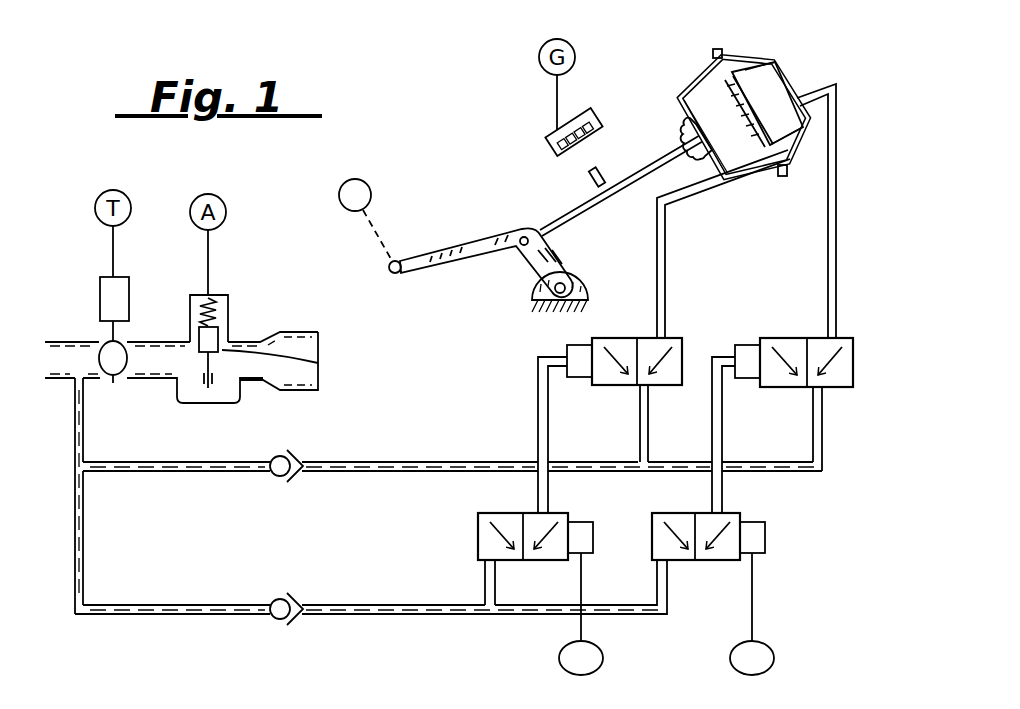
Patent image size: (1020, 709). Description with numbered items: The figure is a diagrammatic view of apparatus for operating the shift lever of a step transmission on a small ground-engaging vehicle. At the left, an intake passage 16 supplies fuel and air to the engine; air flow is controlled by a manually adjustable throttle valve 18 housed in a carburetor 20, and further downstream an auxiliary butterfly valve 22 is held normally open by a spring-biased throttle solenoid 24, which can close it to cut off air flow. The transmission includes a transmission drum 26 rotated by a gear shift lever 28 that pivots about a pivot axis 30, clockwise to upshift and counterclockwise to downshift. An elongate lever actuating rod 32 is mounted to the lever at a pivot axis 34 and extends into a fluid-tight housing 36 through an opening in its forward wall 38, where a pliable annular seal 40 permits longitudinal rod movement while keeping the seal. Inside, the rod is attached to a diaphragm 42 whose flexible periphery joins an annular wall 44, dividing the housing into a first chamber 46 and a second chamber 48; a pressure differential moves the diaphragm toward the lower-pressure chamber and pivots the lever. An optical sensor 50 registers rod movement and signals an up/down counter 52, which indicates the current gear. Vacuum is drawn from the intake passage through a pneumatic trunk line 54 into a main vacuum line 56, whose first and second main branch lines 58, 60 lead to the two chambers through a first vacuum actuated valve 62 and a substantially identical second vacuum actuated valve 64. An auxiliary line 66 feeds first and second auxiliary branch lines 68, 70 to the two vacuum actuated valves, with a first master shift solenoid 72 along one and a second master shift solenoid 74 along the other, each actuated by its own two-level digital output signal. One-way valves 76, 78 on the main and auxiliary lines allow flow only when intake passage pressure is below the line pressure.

The intake passage 16 is at (162, 340).
The throttle valve 18 is at (318, 363).
The carburetor 20 is at (230, 318).
The butterfly valve 22 is at (126, 368).
The throttle solenoid 24 is at (100, 292).
The transmission drum 26 is at (362, 180).
The gear shift lever 28 is at (450, 247).
The pivot axis 30 is at (578, 284).
The lever actuating rod 32 is at (575, 217).
The pivot axis 34 is at (522, 250).
The housing 36 is at (690, 95).
The forward wall 38 is at (686, 117).
The annular seal 40 is at (677, 137).
The diaphragm 42 is at (773, 98).
The annular wall 44 is at (790, 148).
The first chamber 46 is at (713, 97).
The second chamber 48 is at (800, 100).
The optical sensor 50 is at (592, 184).
The up/down counter 52 is at (550, 130).
The pneumatic trunk line 54 is at (83, 543).
The main vacuum line 56 is at (172, 473).
The first main branch line 58 is at (640, 432).
The second main branch line 60 is at (824, 430).
The first vacuum actuated valve 62 is at (676, 338).
The second vacuum actuated valve 64 is at (850, 338).
The auxiliary line 66 is at (155, 616).
The first auxiliary branch line 68 is at (538, 432).
The second auxiliary branch line 70 is at (722, 429).
The first master shift solenoid 72 is at (563, 513).
The second master shift solenoid 74 is at (735, 513).
The one-way valve 76 is at (291, 457).
The one-way valve 78 is at (291, 599).